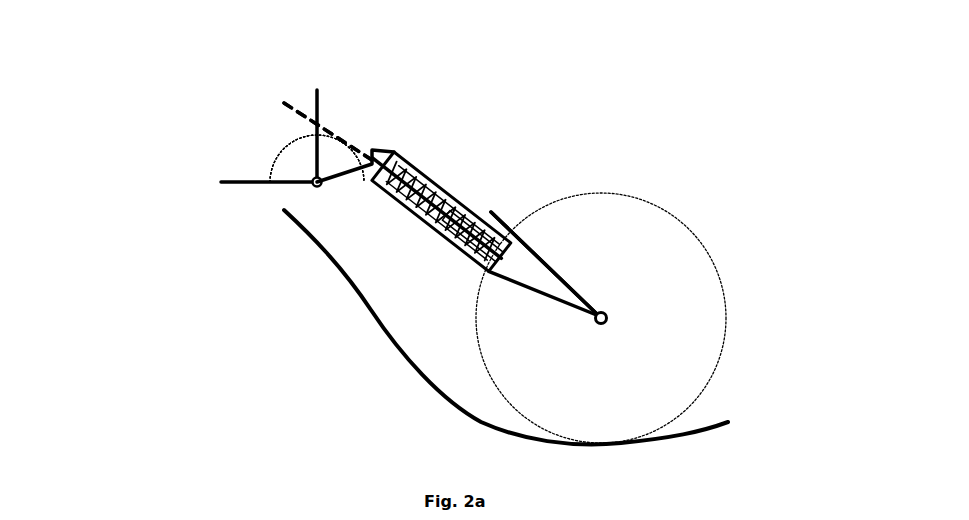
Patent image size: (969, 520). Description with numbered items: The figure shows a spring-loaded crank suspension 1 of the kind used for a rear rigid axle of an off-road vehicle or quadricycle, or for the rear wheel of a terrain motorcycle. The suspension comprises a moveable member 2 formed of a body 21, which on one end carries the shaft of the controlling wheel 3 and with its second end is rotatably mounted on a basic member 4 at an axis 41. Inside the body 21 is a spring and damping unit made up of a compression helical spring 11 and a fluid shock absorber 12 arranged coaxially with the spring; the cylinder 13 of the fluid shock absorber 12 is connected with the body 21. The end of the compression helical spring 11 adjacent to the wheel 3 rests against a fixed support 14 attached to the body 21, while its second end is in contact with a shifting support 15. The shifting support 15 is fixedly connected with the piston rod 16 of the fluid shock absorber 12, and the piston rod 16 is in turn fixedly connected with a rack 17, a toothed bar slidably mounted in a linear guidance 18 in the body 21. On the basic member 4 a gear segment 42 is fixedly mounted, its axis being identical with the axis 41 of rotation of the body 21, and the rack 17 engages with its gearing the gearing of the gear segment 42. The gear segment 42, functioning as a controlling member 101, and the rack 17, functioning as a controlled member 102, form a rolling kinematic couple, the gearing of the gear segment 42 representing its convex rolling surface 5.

The spring-loaded crank suspension 1 is at (399, 270).
The moveable member 2 is at (495, 212).
The controlling wheel 3 is at (658, 353).
The basic member 4 is at (233, 181).
The convex rolling surface 5 is at (287, 143).
The compression helical spring 11 is at (410, 214).
The fluid shock absorber 12 is at (487, 268).
The cylinder 13 is at (492, 212).
The fixed support 14 is at (458, 196).
The shifting support 15 is at (383, 152).
The piston rod 16 is at (440, 187).
The rack 17 is at (282, 100).
The linear guidance 18 is at (370, 158).
The body 21 is at (495, 212).
The axis 41 is at (322, 186).
The gear segment 42 is at (282, 163).
The controlling member 101 is at (282, 163).
The controlled member 102 is at (282, 100).